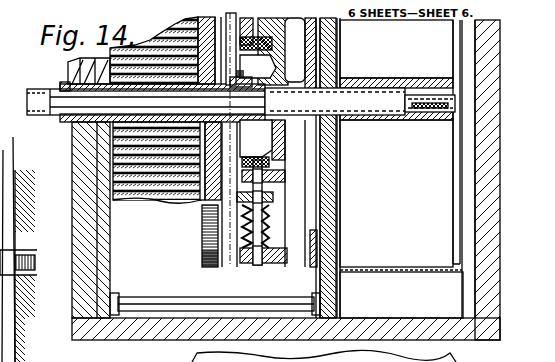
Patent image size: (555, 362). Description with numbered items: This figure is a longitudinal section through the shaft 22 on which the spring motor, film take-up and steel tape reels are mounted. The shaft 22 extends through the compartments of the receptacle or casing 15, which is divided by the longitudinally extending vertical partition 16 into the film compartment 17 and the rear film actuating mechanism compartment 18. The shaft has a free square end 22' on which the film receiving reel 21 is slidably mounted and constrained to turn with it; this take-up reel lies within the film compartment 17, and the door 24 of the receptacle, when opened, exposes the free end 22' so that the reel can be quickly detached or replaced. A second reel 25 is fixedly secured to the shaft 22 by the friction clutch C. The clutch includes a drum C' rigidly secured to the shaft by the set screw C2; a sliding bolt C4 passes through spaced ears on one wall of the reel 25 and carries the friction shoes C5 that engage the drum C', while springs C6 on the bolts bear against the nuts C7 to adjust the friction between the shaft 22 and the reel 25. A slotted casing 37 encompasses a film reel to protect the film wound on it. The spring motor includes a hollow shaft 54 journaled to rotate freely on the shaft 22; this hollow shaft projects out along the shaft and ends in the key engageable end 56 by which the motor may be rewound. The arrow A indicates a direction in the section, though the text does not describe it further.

The receptacle or casing 15 is at (87, 294).
The vertical partition 16 is at (325, 205).
The film compartment 17 is at (466, 199).
The rear film actuating mechanism compartment 18 is at (128, 281).
The film receiving reel 21 is at (453, 235).
The shaft 22 is at (335, 83).
The free square end 22' is at (430, 85).
The door 24 is at (483, 157).
The second reel 25 is at (312, 256).
The casing 37 is at (404, 273).
The hollow shaft 54 is at (182, 122).
The key engageable end 56 is at (66, 125).
The actuating rod A is at (240, 218).
The friction clutch C is at (272, 207).
The drum C' is at (272, 36).
The set screw C2 is at (280, 62).
The sliding bolt C4 is at (240, 258).
The friction shoes C5 is at (270, 152).
The springs C6 is at (277, 182).
The nuts C7 is at (270, 200).